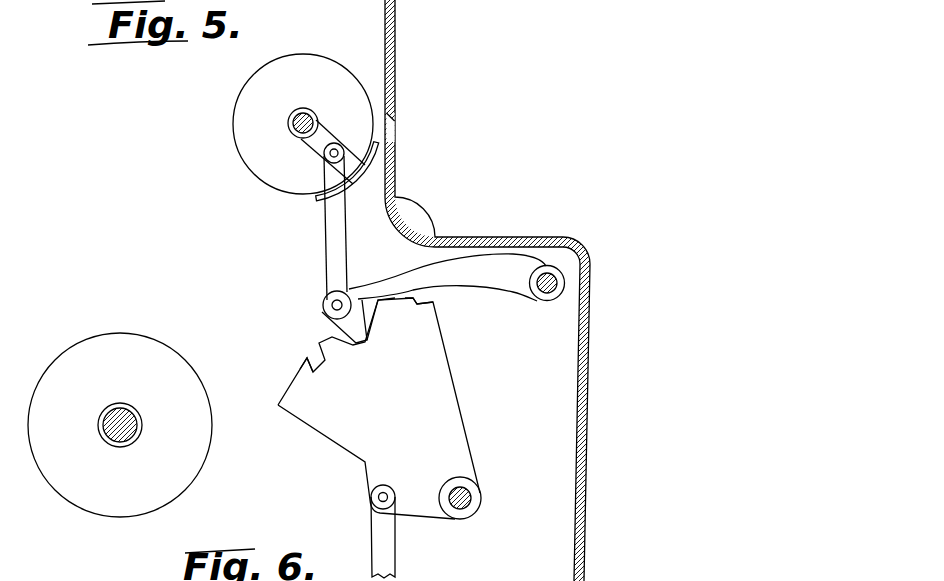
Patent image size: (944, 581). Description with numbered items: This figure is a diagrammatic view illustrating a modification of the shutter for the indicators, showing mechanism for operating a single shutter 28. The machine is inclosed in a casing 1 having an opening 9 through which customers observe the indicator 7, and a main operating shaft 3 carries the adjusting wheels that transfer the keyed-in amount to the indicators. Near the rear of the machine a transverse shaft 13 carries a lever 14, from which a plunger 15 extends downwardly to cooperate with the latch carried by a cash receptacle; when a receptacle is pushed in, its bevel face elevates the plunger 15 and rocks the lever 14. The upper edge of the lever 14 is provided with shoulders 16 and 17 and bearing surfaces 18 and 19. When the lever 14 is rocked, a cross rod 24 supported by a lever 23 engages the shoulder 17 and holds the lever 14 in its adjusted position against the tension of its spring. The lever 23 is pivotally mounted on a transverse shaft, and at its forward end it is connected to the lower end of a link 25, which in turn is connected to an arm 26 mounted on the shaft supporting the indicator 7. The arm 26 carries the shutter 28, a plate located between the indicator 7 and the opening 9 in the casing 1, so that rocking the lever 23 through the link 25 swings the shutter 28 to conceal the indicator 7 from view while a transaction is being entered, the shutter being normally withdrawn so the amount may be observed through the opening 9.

The casing 1 is at (589, 462).
The main operating shaft 3 is at (123, 428).
The indicator 7 is at (250, 152).
The opening 9 is at (391, 128).
The transverse shaft 13 is at (482, 498).
The lever 14 is at (453, 433).
The plunger 15 is at (396, 553).
The shoulder 16 is at (354, 338).
The shoulder 17 is at (313, 373).
The bearing surface 18 is at (418, 306).
The bearing surface 19 is at (397, 297).
The lever 23 is at (493, 283).
The cross rod 24 is at (330, 318).
The link 25 is at (340, 263).
The arm 26 is at (322, 143).
The shutter 28 is at (348, 182).